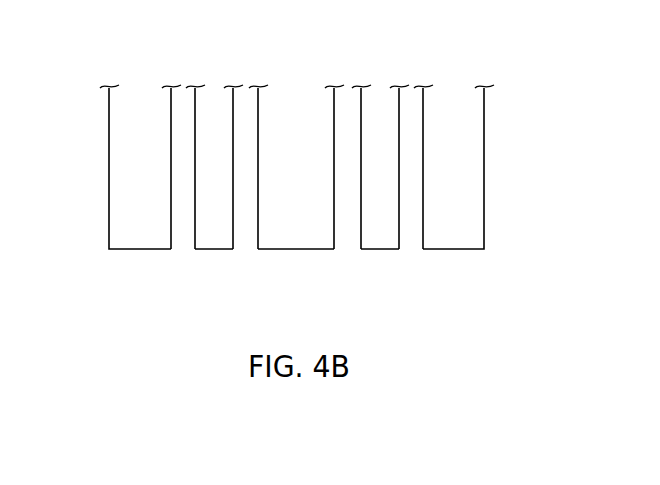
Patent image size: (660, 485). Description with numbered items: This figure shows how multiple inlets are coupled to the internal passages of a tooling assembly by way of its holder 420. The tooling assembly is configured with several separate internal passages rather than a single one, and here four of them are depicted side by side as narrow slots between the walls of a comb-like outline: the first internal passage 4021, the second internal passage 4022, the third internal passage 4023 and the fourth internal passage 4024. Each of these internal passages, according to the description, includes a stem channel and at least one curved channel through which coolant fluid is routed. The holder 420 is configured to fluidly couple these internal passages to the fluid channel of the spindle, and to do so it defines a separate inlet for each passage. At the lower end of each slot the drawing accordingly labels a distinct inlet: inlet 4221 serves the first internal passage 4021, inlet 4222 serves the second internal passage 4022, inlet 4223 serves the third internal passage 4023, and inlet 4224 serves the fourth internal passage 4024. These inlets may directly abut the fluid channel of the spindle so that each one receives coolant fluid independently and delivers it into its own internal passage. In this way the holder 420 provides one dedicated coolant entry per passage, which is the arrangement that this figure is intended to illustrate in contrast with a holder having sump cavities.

The holder 420 is at (352, 172).
The internal passage 4021 is at (181, 145).
The internal passage 4022 is at (243, 145).
The internal passage 4023 is at (347, 144).
The internal passage 4024 is at (408, 144).
The inlet 4221 is at (172, 237).
The inlet 4222 is at (234, 237).
The inlet 4223 is at (337, 237).
The inlet 4224 is at (400, 237).